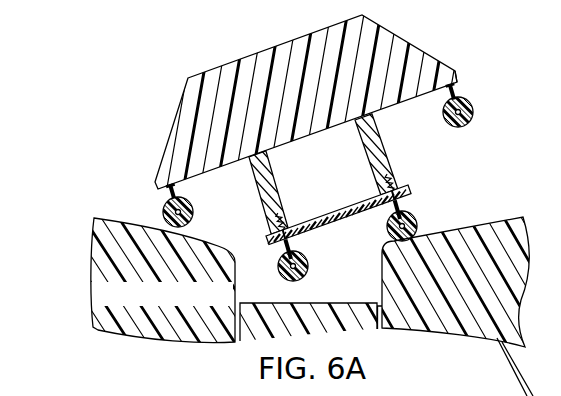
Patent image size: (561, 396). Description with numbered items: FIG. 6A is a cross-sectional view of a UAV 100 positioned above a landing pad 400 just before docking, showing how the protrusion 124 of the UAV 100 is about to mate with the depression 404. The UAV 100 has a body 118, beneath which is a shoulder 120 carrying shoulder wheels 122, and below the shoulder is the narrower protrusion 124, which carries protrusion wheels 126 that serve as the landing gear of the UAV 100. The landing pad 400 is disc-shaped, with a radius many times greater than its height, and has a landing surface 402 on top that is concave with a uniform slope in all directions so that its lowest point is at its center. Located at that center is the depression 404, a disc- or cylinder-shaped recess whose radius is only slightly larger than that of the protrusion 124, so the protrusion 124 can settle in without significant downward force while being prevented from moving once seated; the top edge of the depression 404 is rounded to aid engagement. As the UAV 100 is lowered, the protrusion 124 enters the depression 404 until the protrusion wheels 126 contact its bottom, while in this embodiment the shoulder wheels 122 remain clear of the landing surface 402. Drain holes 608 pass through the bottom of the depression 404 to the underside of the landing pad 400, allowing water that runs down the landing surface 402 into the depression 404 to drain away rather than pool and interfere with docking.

The UAV 100 is at (204, 44).
The body 118 is at (180, 135).
The shoulder 120 is at (458, 77).
The shoulder wheels 122 is at (165, 205).
The protrusion 124 is at (410, 191).
The protrusion wheels 126 is at (391, 236).
The landing pad 400 is at (73, 309).
The landing surface 402 is at (141, 213).
The depression 404 is at (236, 294).
The drain holes 608 is at (379, 330).